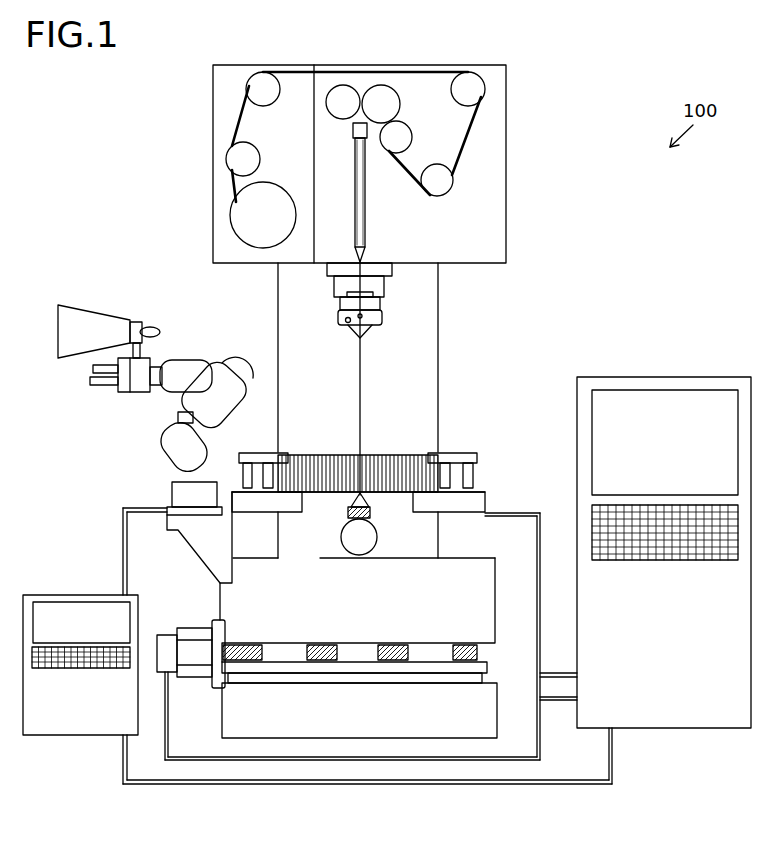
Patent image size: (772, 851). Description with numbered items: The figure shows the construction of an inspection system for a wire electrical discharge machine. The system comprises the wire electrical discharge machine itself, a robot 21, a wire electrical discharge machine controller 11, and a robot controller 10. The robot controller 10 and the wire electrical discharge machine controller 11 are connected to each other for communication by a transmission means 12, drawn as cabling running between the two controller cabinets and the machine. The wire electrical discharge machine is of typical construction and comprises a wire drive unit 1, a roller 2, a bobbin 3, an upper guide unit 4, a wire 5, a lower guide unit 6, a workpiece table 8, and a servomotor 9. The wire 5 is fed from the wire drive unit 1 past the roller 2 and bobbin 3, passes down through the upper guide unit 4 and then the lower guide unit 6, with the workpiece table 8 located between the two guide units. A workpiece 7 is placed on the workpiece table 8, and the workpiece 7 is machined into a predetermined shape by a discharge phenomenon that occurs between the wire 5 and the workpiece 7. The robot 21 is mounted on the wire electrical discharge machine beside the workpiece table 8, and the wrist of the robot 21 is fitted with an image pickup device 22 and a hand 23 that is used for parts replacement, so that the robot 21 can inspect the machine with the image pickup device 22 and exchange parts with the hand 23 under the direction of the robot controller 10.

The wire drive unit 1 is at (507, 93).
The roller 2 is at (380, 90).
The bobbin 3 is at (232, 213).
The upper guide unit 4 is at (373, 333).
The wire 5 is at (363, 397).
The lower guide unit 6 is at (353, 500).
The workpiece 7 is at (420, 453).
The workpiece table 8 is at (480, 487).
The servomotor 9 is at (192, 627).
The robot controller 10 is at (55, 737).
The wire electrical discharge machine controller 11 is at (707, 377).
The transmission means 12 is at (478, 783).
The robot 21 is at (197, 358).
The image pickup device 22 is at (137, 330).
The hand 23 is at (108, 385).